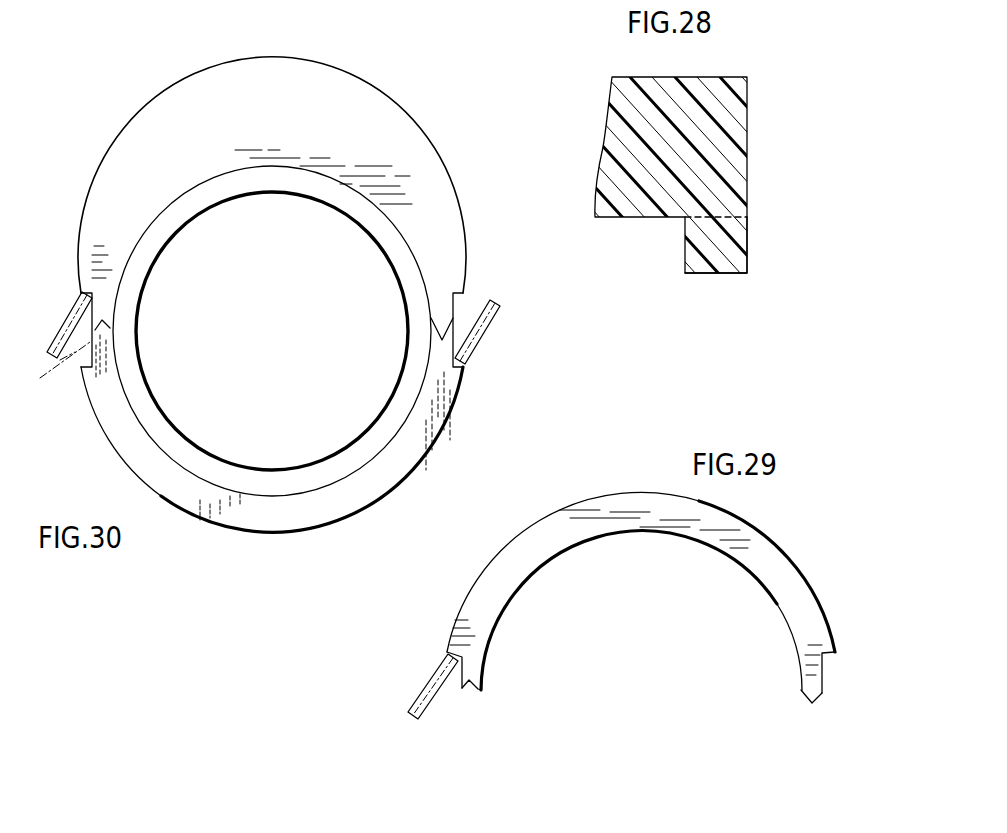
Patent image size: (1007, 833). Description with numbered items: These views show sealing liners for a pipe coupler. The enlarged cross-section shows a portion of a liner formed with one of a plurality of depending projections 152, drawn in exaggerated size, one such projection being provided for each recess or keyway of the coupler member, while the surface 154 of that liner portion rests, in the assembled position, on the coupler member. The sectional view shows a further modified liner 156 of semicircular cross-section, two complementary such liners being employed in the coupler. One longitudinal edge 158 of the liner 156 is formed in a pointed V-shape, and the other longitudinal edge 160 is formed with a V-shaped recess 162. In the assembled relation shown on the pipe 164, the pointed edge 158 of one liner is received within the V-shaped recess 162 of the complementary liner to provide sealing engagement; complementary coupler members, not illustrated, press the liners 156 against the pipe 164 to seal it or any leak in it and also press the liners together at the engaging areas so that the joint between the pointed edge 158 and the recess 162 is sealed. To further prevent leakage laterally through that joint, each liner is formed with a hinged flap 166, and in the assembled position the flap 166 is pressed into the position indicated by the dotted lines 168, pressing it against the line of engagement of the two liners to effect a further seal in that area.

In FIG. 28, the projection 152 is at (693, 257).
In FIG. 28, the surface 154 is at (644, 218).
In FIG. 30, the liner 156 is at (262, 130).
In FIG. 29, the liner 156 is at (585, 500).
In FIG. 30, the pointed edge 158 is at (441, 325).
In FIG. 29, the pointed edge 158 is at (812, 694).
In FIG. 29, the longitudinal edge 160 is at (472, 672).
In FIG. 30, the V-shaped recess 162 is at (112, 332).
In FIG. 29, the V-shaped recess 162 is at (470, 688).
In FIG. 30, the pipe 164 is at (360, 447).
In FIG. 30, the hinged flap 166 is at (74, 318).
In FIG. 29, the hinged flap 166 is at (414, 702).
In FIG. 30, the dotted lines 168 is at (44, 383).